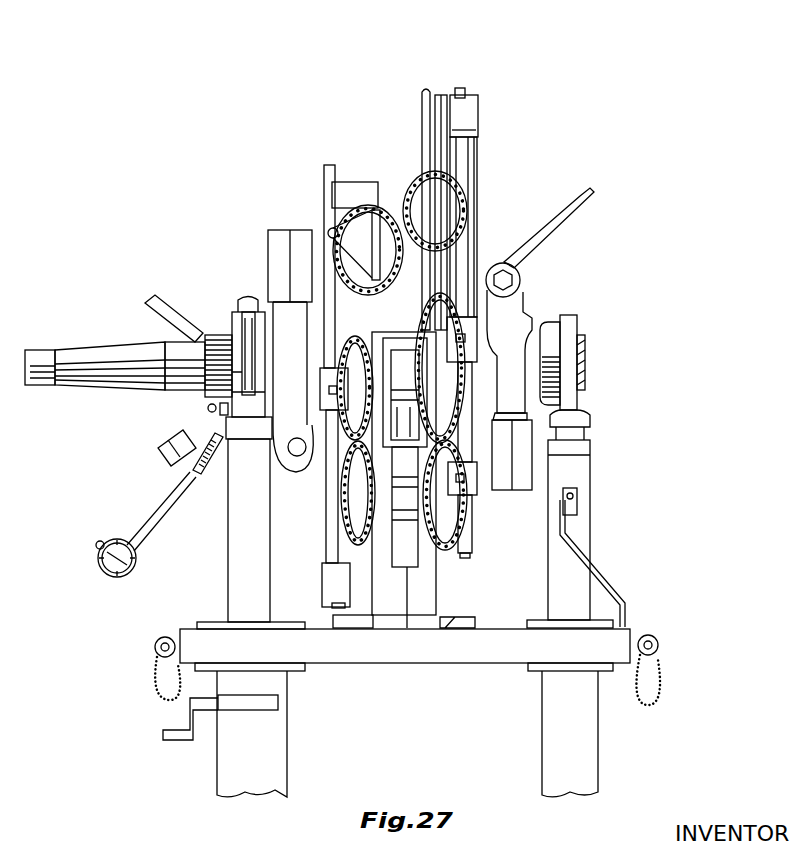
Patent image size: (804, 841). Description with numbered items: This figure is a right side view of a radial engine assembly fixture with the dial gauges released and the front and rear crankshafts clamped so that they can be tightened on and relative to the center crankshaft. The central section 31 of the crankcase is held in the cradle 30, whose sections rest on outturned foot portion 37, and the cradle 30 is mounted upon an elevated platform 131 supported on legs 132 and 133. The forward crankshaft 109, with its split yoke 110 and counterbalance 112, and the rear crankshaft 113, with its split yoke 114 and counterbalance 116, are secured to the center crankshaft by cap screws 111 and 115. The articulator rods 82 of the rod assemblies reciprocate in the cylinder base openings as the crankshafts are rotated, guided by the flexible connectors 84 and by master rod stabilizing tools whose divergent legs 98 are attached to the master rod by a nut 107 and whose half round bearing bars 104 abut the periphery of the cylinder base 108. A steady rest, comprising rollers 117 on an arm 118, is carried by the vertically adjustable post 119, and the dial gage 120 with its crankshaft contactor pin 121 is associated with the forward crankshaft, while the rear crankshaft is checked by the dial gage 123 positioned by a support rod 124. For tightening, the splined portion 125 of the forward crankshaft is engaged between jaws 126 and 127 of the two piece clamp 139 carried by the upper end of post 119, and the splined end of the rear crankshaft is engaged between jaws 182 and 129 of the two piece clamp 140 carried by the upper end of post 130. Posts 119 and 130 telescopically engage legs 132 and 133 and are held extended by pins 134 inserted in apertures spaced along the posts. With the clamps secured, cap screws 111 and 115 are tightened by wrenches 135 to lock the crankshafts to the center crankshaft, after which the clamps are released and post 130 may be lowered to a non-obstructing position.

The cradle 30 is at (425, 576).
The central section of the crankcase 31 is at (440, 270).
The outturned foot portion 37 is at (455, 621).
The articulator rods 82 is at (324, 556).
The flexible connectors 84 is at (338, 520).
The divergent legs 98 is at (332, 215).
The half round bearing bars 104 is at (383, 213).
The nut 107 is at (330, 232).
The cylinder base 108 is at (405, 190).
The forward crankshaft 109 is at (75, 380).
The split yoke 110 is at (292, 464).
The cap screw 111 is at (305, 458).
The counterbalance 112 is at (277, 245).
The rear crankshaft 113 is at (584, 360).
The split yoke 114 is at (510, 312).
The cap screw 115 is at (522, 282).
The counterbalance 116 is at (525, 455).
The rollers 117 is at (160, 452).
The arm 118 is at (195, 447).
The post 119 is at (240, 565).
The dial gage 120 is at (110, 572).
The crankshaft contactor pin 121 is at (103, 546).
The dial gage 123 is at (580, 506).
The support rod 124 is at (595, 572).
The splined portion 125 is at (222, 338).
The jaw 126 is at (238, 387).
The jaw 127 is at (238, 335).
The jaw 129 is at (570, 325).
The post 130 is at (585, 474).
The elevated platform 131 is at (440, 650).
The leg 132 is at (275, 735).
The leg 133 is at (590, 756).
The pins 134 is at (165, 637).
The wrenches 135 is at (152, 309).
The two piece clamp 139 is at (243, 378).
The two piece clamp 140 is at (567, 352).
The jaw 182 is at (572, 400).